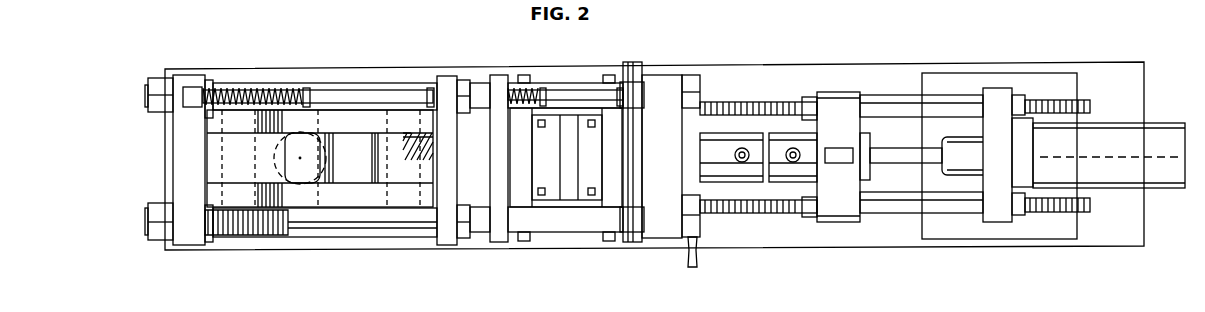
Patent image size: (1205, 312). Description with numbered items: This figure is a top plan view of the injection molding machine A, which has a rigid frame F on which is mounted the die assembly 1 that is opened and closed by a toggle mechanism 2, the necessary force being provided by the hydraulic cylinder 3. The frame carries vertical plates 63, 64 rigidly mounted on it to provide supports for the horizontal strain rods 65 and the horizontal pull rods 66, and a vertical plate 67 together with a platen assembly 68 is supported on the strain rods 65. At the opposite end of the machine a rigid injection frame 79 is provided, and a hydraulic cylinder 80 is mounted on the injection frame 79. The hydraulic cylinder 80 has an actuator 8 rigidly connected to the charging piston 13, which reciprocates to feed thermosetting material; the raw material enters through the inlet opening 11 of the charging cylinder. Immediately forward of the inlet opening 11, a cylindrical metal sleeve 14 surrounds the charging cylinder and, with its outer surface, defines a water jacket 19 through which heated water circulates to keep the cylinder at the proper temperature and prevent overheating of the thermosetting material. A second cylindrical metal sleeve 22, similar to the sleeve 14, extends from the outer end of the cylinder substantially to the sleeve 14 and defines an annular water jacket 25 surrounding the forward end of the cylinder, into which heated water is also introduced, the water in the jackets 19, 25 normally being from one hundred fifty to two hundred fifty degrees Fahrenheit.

The injection molding machine A is at (293, 30).
The rigid frame F is at (243, 253).
The die assembly 1 is at (585, 202).
The toggle mechanism 2 is at (363, 204).
The hydraulic cylinder 3 is at (327, 170).
The actuator 8 is at (960, 145).
The inlet opening 11 is at (845, 147).
The charging piston 13 is at (889, 155).
The cylindrical metal sleeve 14 is at (793, 132).
The water jacket 19 is at (798, 182).
The second cylindrical metal sleeve 22 is at (712, 140).
The annular water jacket 25 is at (728, 182).
The vertical plate 63 is at (190, 80).
The vertical plate 64 is at (672, 80).
The horizontal strain rods 65 is at (402, 80).
The horizontal pull rods 66 is at (363, 93).
The vertical plate 67 is at (448, 80).
The platen assembly 68 is at (497, 80).
The rigid injection frame 79 is at (1000, 93).
The hydraulic cylinder 80 is at (1157, 128).